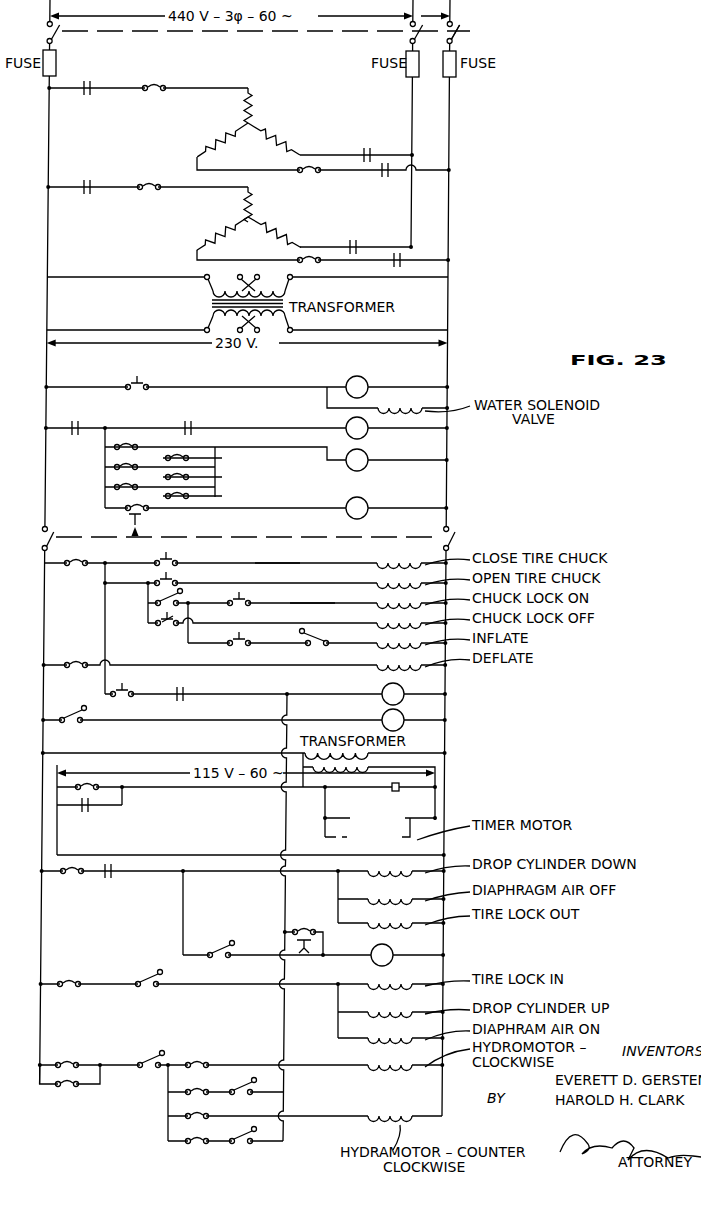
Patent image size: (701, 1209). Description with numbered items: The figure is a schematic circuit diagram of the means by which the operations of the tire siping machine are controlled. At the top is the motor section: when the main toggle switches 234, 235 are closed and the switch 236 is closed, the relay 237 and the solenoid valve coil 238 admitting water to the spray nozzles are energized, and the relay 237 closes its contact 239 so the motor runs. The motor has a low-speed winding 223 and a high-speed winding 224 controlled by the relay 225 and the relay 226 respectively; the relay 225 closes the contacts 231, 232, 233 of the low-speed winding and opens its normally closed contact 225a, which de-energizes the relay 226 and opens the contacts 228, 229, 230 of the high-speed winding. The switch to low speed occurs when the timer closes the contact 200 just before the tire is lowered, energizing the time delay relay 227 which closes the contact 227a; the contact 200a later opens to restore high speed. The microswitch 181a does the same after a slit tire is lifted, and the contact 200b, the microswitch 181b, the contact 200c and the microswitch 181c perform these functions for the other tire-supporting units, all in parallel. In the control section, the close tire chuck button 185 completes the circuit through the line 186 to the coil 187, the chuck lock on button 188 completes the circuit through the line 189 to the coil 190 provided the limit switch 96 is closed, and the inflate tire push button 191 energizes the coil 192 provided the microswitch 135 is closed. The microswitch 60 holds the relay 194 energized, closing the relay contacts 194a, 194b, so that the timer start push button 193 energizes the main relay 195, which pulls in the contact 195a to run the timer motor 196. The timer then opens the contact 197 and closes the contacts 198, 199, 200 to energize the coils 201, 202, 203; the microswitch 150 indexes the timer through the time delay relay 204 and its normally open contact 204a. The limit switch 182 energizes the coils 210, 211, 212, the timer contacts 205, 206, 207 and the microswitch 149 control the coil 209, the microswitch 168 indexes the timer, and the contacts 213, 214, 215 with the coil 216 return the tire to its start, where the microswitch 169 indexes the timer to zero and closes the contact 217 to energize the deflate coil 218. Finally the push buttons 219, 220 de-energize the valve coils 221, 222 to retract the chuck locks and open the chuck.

The main toggle switch 234 is at (507, 46).
The contact 233 is at (90, 86).
The low-speed winding 223 is at (251, 122).
The contact 232 is at (368, 152).
The contact 231 is at (383, 173).
The contact 229 is at (92, 179).
The high-speed winding 224 is at (278, 238).
The contact 228 is at (354, 244).
The contact 230 is at (404, 260).
The switch 236 is at (139, 386).
The relay 237 is at (364, 384).
The solenoid valve coil 238 is at (380, 409).
The contact 239 is at (79, 425).
The normally closed contact 225a is at (189, 430).
The relay 226 is at (366, 433).
The time delay relay 227 is at (366, 465).
The contact 200a is at (114, 447).
The contact 200b is at (114, 467).
The contact 200c is at (114, 487).
The microswitch 181a is at (213, 458).
The microswitch 181b is at (213, 477).
The microswitch 181c is at (213, 496).
The relay 225 is at (348, 502).
The contact 227a is at (145, 513).
The main toggle switch 235 is at (460, 539).
The contact 197 is at (90, 554).
The close tire chuck button 185 is at (173, 559).
The line 186 is at (274, 566).
The coil 187 is at (395, 564).
The push button 220 is at (176, 581).
The valve coil 222 is at (382, 585).
The limit switch 96 is at (157, 602).
The chuck lock on button 188 is at (248, 601).
The line 189 is at (305, 607).
The coil 190 is at (382, 605).
The valve coil 221 is at (382, 626).
The push button 219 is at (165, 626).
The inflate tire push button 191 is at (250, 637).
The microswitch 135 is at (324, 641).
The coil 192 is at (383, 647).
The contact 217 is at (86, 662).
The solenoid valve coil 218 is at (382, 669).
The timer start push button 193 is at (128, 690).
The relay contact 194a is at (181, 693).
The main relay 195 is at (398, 696).
The microswitch 60 is at (77, 716).
The relay 194 is at (398, 722).
The contact 199 is at (97, 784).
The timer motor 196 is at (392, 789).
The contact 195a is at (92, 806).
The contact 198 is at (64, 875).
The relay contact 194b is at (112, 875).
The coil 201 is at (377, 873).
The coil 202 is at (377, 900).
The coil 203 is at (377, 925).
The microswitch 150 is at (216, 943).
The normally open contact 204a is at (305, 932).
The time delay relay 204 is at (390, 956).
The contact 200 is at (70, 975).
The limit switch 182 is at (155, 980).
The solenoid valve coil 210 is at (384, 990).
The solenoid valve coil 211 is at (377, 1013).
The solenoid valve coil 212 is at (377, 1039).
The timer contact 205 is at (82, 1054).
The microswitch 149 is at (146, 1052).
The timer contact 206 is at (210, 1054).
The microswitch 168 is at (253, 1088).
The timer contact 207 is at (210, 1083).
The solenoid valve coil 209 is at (368, 1069).
The contact 213 is at (187, 1115).
The solenoid valve coil 216 is at (390, 1118).
The contact 214 is at (187, 1140).
The microswitch 169 is at (242, 1143).
The contact 215 is at (65, 1098).